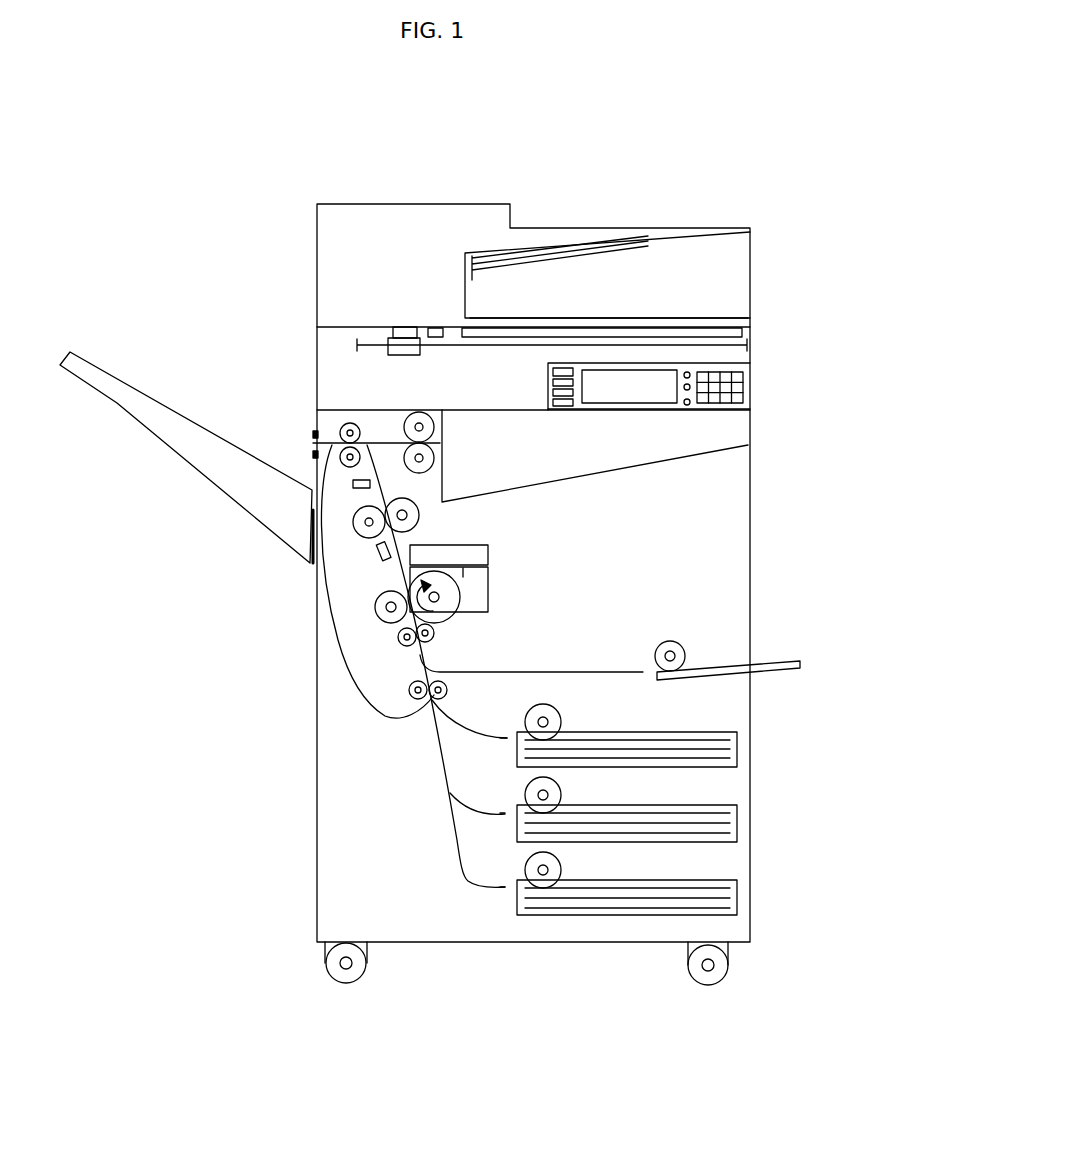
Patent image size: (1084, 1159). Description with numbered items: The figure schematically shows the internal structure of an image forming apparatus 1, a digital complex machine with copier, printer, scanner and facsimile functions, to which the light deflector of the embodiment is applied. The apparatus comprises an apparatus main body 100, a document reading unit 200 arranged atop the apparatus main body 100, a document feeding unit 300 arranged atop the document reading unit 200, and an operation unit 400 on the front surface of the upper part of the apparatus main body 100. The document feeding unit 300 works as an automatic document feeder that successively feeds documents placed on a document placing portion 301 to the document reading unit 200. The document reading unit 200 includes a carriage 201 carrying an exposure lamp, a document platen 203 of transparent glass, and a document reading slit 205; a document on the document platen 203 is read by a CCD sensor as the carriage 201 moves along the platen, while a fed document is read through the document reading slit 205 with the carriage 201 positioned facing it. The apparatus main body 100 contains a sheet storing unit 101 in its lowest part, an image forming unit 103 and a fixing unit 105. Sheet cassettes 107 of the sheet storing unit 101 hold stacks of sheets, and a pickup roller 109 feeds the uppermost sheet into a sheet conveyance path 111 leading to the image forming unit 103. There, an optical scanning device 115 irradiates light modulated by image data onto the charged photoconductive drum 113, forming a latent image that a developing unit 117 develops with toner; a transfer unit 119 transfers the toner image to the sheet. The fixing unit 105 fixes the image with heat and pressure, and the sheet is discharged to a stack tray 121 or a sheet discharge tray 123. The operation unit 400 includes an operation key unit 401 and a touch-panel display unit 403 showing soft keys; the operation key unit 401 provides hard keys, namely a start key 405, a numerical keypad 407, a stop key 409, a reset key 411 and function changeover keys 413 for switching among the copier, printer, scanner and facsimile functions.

The image forming apparatus 1 is at (142, 201).
The apparatus main body 100 is at (724, 586).
The sheet storing unit 101 is at (770, 762).
The image forming unit 103 is at (358, 594).
The fixing unit 105 is at (367, 539).
The sheet cassettes 107 is at (737, 762).
The pickup roller 109 is at (560, 723).
The sheet conveyance path 111 is at (422, 660).
The photoconductive drum 113 is at (446, 618).
The optical scanning device 115 is at (483, 553).
The developing unit 117 is at (483, 590).
The transfer unit 119 is at (382, 622).
The stack tray 121 is at (229, 506).
The sheet discharge tray 123 is at (592, 478).
The document reading unit 200 is at (338, 357).
The carriage 201 is at (405, 355).
The document platen 203 is at (742, 333).
The document reading slit 205 is at (402, 331).
The document feeding unit 300 is at (569, 225).
The document placing portion 301 is at (670, 233).
The operation unit 400 is at (770, 378).
The operation key unit 401 is at (754, 410).
The display unit 403 is at (605, 392).
The start key 405 is at (687, 406).
The numerical keypad 407 is at (703, 406).
The stop key 409 is at (687, 383).
The reset key 411 is at (688, 372).
The function changeover keys 413 is at (553, 394).